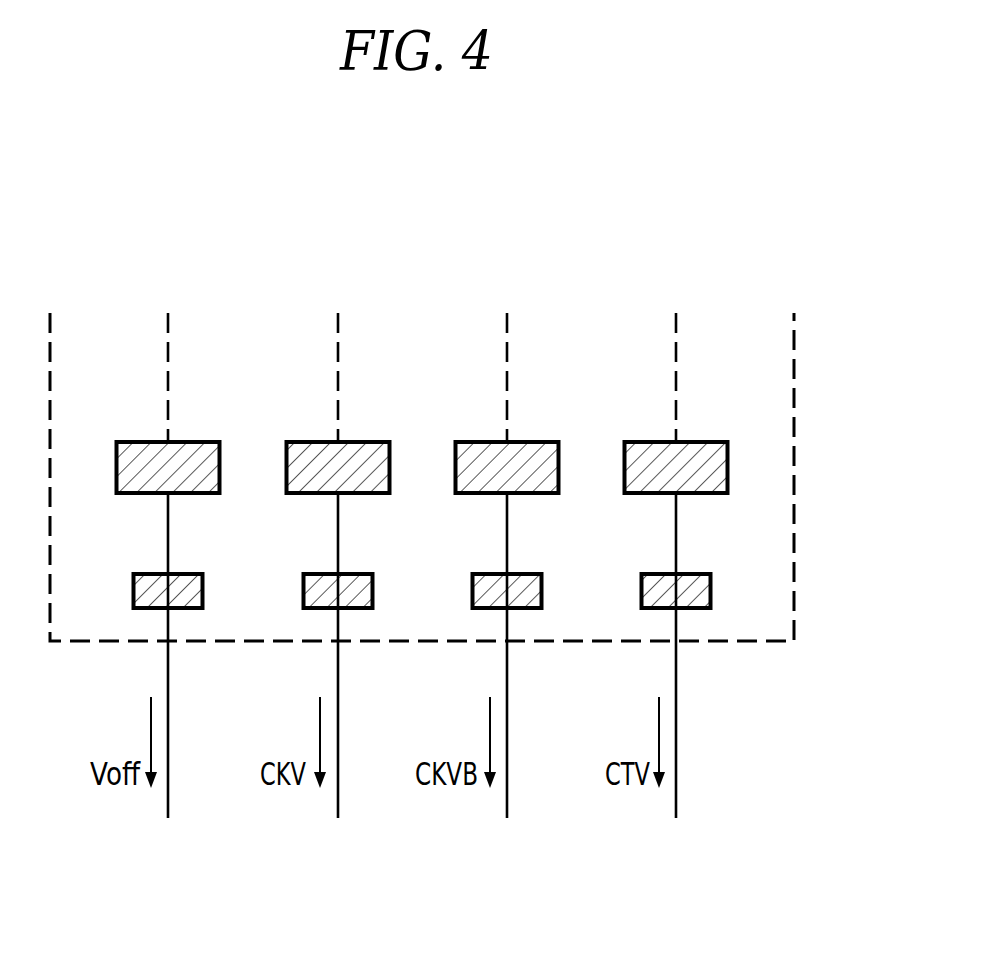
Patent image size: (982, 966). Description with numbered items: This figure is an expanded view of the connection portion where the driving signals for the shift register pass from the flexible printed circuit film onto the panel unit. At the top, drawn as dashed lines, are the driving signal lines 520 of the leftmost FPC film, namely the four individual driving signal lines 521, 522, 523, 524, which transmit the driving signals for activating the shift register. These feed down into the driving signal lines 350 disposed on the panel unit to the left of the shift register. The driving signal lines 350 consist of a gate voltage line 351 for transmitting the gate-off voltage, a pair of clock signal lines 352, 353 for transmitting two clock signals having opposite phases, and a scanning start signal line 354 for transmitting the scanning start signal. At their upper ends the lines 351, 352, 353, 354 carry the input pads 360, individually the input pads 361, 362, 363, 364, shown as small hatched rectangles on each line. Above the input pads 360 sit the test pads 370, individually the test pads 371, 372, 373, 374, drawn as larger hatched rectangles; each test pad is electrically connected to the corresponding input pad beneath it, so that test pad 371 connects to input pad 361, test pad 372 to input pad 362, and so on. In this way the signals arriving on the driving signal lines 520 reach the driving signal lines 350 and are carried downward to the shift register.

The driving signal lines 520 is at (817, 320).
The driving signal line 521 is at (168, 360).
The driving signal line 522 is at (338, 360).
The driving signal line 523 is at (507, 360).
The driving signal line 524 is at (676, 360).
The test pads 370 is at (817, 427).
The test pad 371 is at (195, 442).
The test pad 372 is at (365, 442).
The test pad 373 is at (534, 442).
The test pad 374 is at (703, 442).
The input pads 360 is at (817, 560).
The input pad 361 is at (203, 590).
The input pad 362 is at (373, 590).
The input pad 363 is at (542, 590).
The input pad 364 is at (711, 590).
The driving signal lines 350 is at (817, 660).
The gate voltage line 351 is at (168, 692).
The clock signal line 352 is at (338, 692).
The clock signal line 353 is at (507, 692).
The scanning start signal line 354 is at (676, 692).